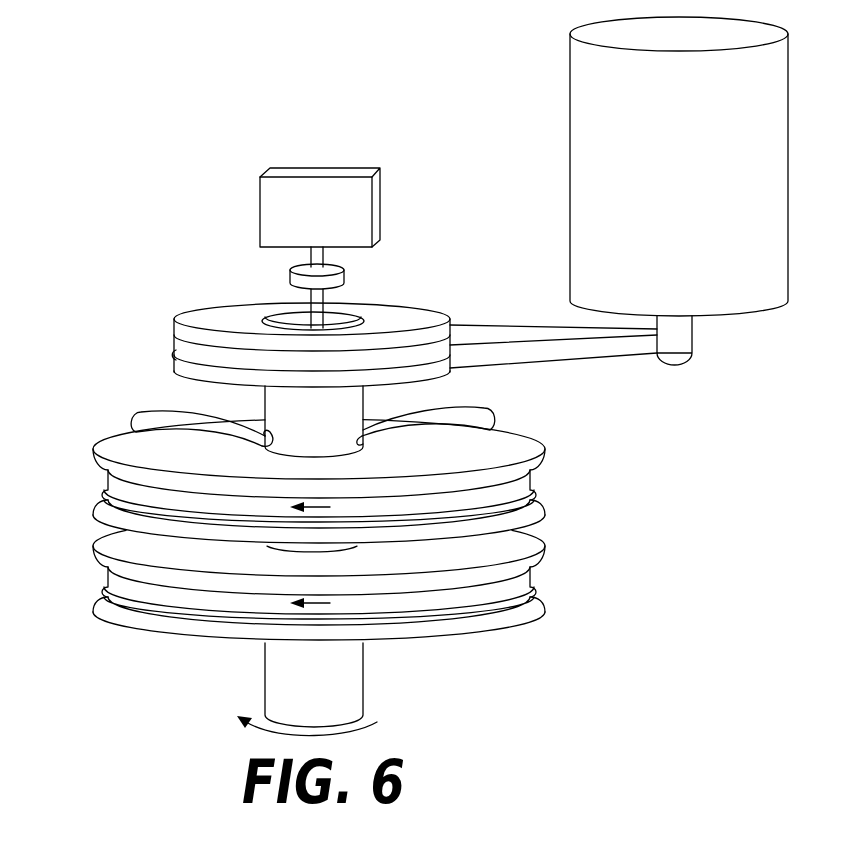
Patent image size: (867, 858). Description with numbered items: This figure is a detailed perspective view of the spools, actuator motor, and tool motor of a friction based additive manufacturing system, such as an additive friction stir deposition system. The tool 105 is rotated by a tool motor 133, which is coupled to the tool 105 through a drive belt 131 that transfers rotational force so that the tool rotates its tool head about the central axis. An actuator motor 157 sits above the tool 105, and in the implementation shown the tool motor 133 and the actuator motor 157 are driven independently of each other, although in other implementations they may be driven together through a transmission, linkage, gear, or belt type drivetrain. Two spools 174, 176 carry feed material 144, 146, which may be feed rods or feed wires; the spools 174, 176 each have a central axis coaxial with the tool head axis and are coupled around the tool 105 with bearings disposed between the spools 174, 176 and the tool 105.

The tool 105 is at (355, 682).
The drive belt 131 is at (627, 374).
The tool motor 133 is at (695, 243).
The feed material 144 is at (140, 410).
The feed material 146 is at (497, 411).
The actuator motor 157 is at (323, 168).
The spool 174 is at (95, 446).
The spool 176 is at (95, 614).